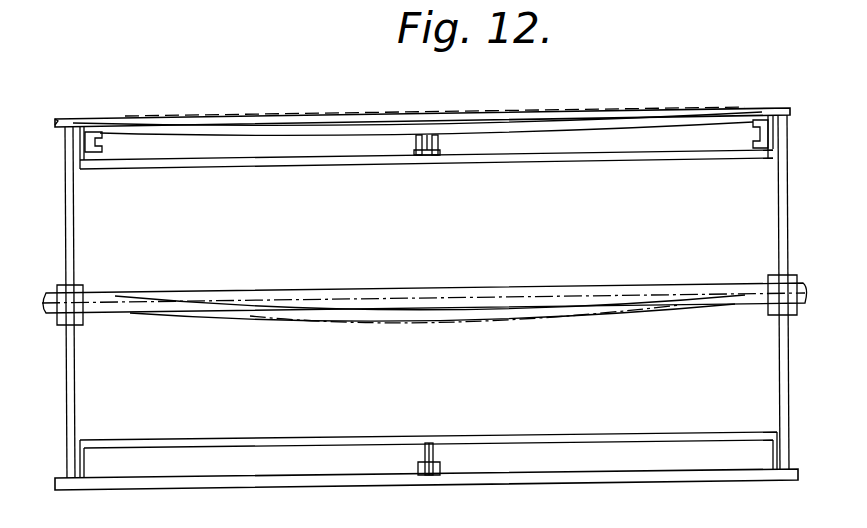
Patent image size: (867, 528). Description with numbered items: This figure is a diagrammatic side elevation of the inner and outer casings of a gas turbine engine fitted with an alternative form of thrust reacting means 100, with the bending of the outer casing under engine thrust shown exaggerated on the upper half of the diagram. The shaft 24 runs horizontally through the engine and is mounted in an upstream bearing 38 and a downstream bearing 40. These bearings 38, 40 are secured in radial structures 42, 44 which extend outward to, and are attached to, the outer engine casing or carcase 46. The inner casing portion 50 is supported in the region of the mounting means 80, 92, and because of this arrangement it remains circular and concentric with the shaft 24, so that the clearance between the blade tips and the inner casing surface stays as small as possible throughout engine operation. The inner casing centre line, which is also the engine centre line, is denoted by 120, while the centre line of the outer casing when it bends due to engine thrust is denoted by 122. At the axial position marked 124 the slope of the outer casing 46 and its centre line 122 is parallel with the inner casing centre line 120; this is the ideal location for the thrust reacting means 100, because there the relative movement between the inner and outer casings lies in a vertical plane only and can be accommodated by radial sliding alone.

The shaft 24 is at (305, 292).
The upstream bearing 38 is at (83, 323).
The downstream bearing 40 is at (768, 312).
The radial structure 42 is at (75, 257).
The radial structure 44 is at (778, 214).
The outer engine casing 46 is at (452, 130).
The inner casing portion 50 is at (264, 163).
The mounting means 80 is at (103, 140).
The mounting means 92 is at (751, 137).
The thrust reacting means 100 is at (408, 146).
The inner casing centre line 120 is at (418, 297).
The outer casing centre line 122 is at (258, 323).
The axial position 124 is at (412, 323).